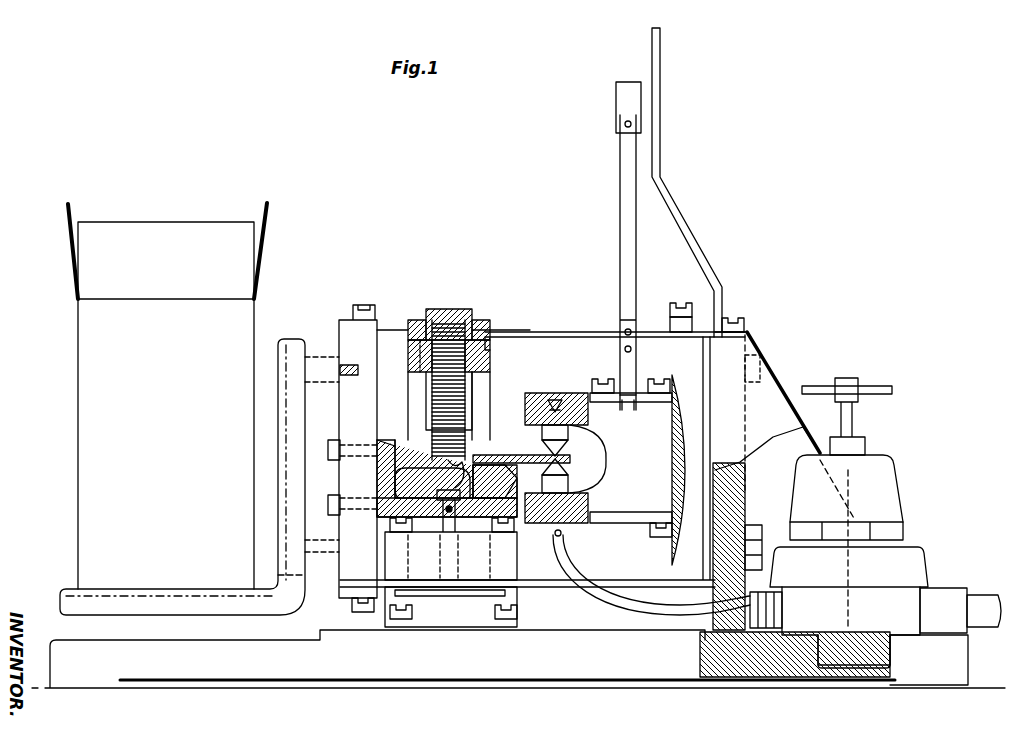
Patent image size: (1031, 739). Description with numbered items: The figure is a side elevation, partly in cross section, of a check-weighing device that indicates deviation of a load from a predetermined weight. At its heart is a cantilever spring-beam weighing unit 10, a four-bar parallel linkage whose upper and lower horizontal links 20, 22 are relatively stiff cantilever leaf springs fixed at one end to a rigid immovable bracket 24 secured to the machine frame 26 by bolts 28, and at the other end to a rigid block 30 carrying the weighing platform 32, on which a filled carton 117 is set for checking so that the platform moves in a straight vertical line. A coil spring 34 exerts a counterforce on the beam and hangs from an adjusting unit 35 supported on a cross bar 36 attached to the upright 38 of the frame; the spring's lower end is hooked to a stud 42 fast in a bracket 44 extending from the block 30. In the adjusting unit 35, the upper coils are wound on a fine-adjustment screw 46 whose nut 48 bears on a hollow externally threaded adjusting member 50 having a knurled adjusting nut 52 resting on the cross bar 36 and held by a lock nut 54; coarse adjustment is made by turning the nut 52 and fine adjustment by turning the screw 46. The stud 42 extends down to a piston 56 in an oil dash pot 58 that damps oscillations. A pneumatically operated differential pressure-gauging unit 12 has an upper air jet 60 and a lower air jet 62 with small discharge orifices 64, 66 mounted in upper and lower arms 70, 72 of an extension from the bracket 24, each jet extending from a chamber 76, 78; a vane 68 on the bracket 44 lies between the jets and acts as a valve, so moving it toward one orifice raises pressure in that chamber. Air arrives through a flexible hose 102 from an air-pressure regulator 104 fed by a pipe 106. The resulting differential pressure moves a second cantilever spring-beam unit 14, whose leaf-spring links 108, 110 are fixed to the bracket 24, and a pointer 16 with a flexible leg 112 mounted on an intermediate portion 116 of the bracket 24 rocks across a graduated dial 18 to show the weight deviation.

The cantilever spring-beam weighing unit 10 is at (343, 290).
The pneumatically operated differential pressure-gauging unit 12 is at (560, 376).
The second cantilever spring-beam unit 14 is at (605, 352).
The pointer 16 is at (618, 108).
The dial 18 is at (661, 82).
The upper horizontal links 20 is at (551, 332).
The lower horizontal links 22 is at (549, 588).
The rigid immovable member or bracket 24 is at (697, 345).
The machine frame 26 is at (240, 664).
The bolts 28 is at (765, 352).
The second rigid member or block 30 is at (338, 345).
The weighing platform 32 is at (278, 458).
The coil spring 34 is at (462, 445).
The adjusting unit 35 is at (470, 300).
The cross bar 36 is at (493, 350).
The upright 38 is at (492, 386).
The stud 42 is at (440, 478).
The bracket 44 is at (375, 477).
The fine-adjustment screw 46 is at (448, 309).
The nut 48 is at (482, 320).
The hollow externally threaded adjusting member 50 is at (426, 405).
The knurled adjusting nut 52 is at (415, 320).
The lock nut 54 is at (420, 372).
The piston 56 is at (432, 596).
The oil dash pot 58 is at (505, 572).
The upper air jet 60 is at (585, 423).
The lower air jet 62 is at (585, 478).
The discharge orifice 64 is at (568, 447).
The discharge orifice 66 is at (568, 466).
The vane 68 is at (606, 455).
The upper arm 70 is at (541, 395).
The lower arm 72 is at (556, 536).
The upper chamber 76 is at (567, 396).
The lower chamber 78 is at (588, 505).
The flexible hose 102 is at (600, 612).
The air-pressure regulator 104 is at (893, 475).
The pipe 106 is at (986, 600).
The upper horizontal links 108 is at (625, 372).
The lower horizontal links 110 is at (648, 530).
The leg 112 is at (625, 404).
The intermediate portion 116 is at (672, 430).
The filled carton 117 is at (80, 389).